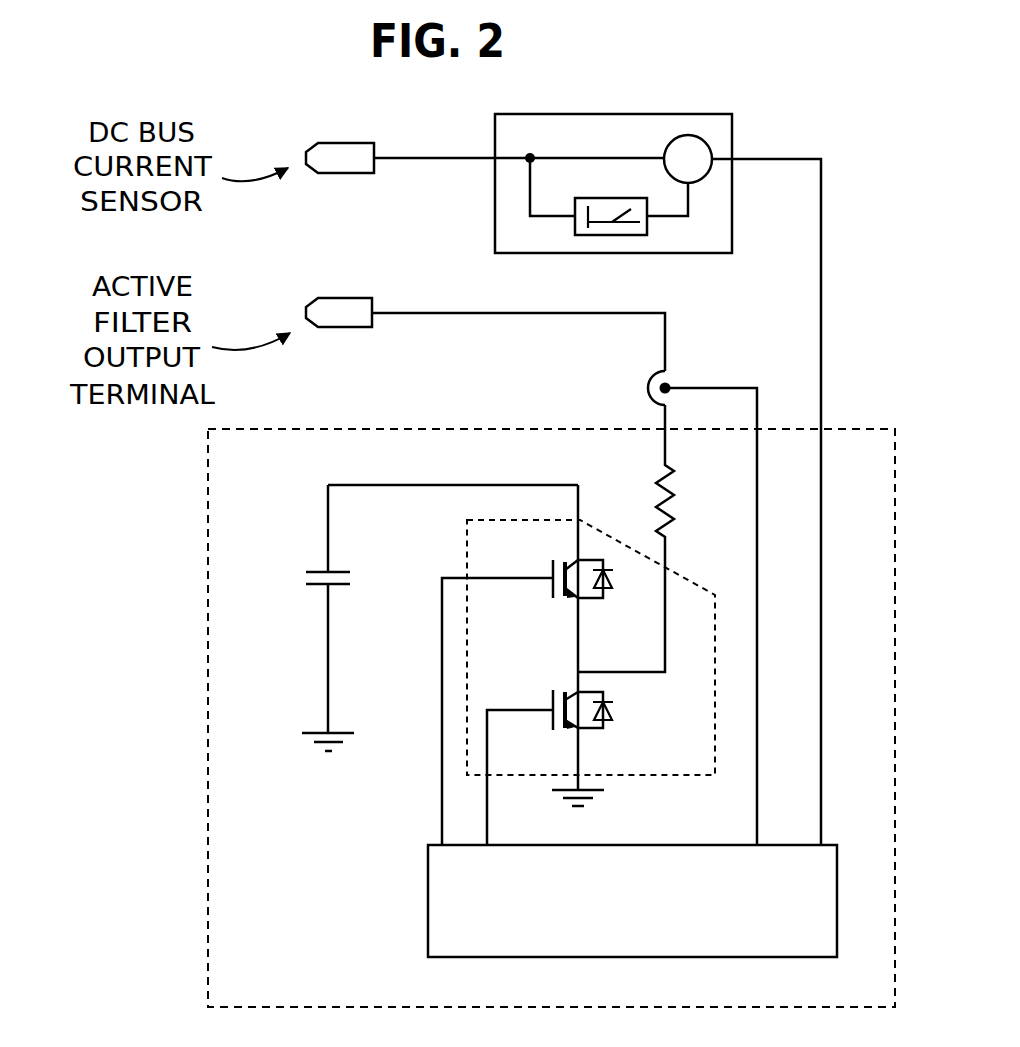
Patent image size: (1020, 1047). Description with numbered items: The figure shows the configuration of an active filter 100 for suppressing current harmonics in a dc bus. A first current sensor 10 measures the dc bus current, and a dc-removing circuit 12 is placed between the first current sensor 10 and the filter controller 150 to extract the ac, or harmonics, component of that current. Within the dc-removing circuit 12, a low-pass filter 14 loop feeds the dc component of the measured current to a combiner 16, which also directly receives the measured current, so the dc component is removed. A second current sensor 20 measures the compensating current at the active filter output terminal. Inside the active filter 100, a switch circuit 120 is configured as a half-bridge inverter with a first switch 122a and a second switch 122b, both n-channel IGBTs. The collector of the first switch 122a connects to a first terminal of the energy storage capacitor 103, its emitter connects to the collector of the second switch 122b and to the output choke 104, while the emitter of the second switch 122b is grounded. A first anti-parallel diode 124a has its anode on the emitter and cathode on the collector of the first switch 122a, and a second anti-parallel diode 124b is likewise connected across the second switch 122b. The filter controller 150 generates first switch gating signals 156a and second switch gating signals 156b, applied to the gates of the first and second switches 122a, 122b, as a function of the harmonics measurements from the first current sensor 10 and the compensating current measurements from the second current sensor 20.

The first current sensor 10 is at (322, 136).
The dc-removing circuit 12 is at (636, 177).
The low-pass filter 14 is at (635, 235).
The combiner 16 is at (702, 180).
The second current sensor 20 is at (673, 375).
The active filter 100 is at (204, 556).
The energy storage capacitor 103 is at (297, 576).
The output choke 104 is at (650, 510).
The switch circuit 120 is at (538, 619).
The first switch 122a is at (560, 551).
The second switch 122b is at (558, 682).
The first anti-parallel diode 124a is at (619, 587).
The second anti-parallel diode 124b is at (616, 712).
The filter controller 150 is at (428, 895).
The first switch gating signals 156a is at (440, 690).
The second switch gating signals 156b is at (488, 815).